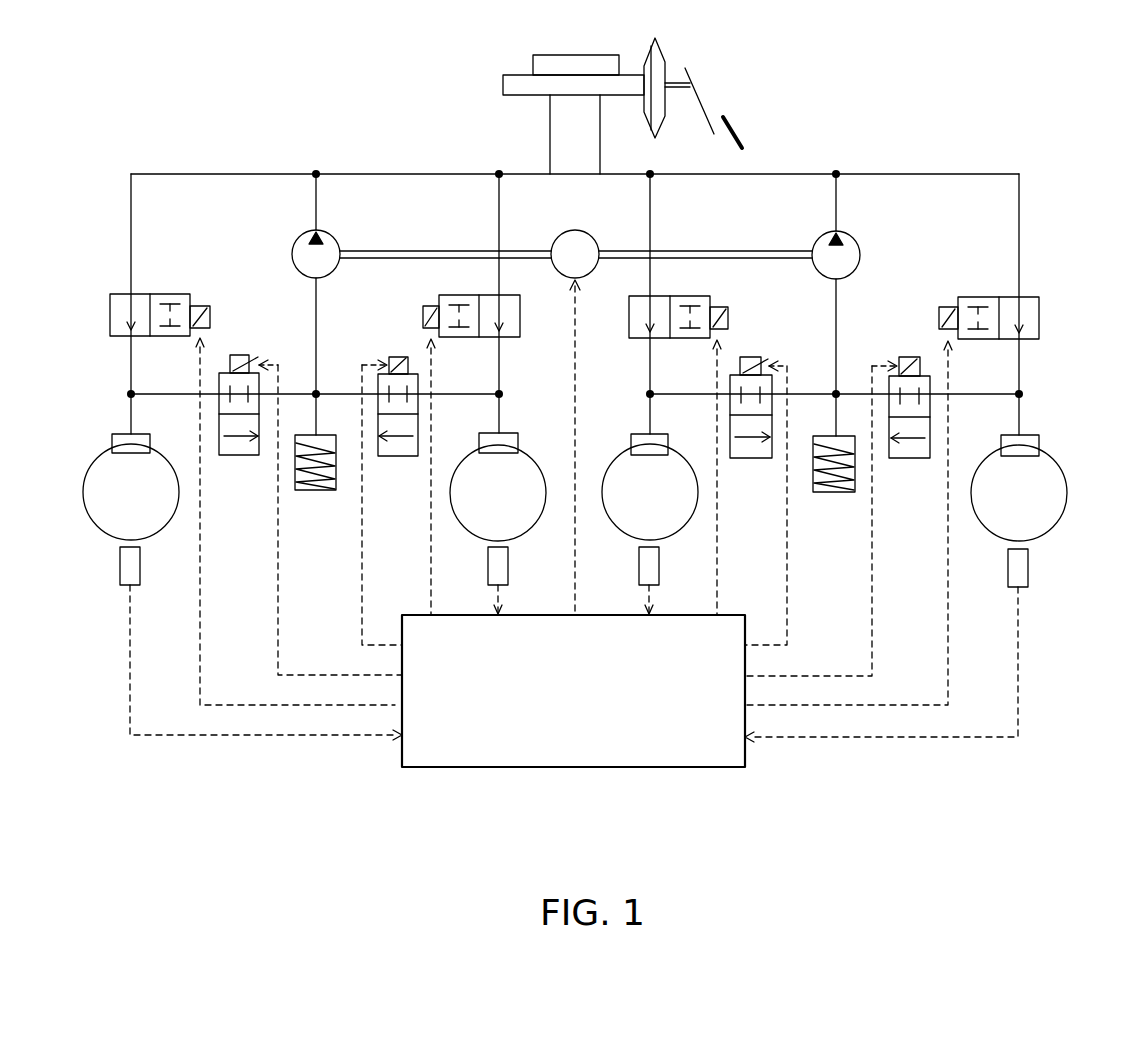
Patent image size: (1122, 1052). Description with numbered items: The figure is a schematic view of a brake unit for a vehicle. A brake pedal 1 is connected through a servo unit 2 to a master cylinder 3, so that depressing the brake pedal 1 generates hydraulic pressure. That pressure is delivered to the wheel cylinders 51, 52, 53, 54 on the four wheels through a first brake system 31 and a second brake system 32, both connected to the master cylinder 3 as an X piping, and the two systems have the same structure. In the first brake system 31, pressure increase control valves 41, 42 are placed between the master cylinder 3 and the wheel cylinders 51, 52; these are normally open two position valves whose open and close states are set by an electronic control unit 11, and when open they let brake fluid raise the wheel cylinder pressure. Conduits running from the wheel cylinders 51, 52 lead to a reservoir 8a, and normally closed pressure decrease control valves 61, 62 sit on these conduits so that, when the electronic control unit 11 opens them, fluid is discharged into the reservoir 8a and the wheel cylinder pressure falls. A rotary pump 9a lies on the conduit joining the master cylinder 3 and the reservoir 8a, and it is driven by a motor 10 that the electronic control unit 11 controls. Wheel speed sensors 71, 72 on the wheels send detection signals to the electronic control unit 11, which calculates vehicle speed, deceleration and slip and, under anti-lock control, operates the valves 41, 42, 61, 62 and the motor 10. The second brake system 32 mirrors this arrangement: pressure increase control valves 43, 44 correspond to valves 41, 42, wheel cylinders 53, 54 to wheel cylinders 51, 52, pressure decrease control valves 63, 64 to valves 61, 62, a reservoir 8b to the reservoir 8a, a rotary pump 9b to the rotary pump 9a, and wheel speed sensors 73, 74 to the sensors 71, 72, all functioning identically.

The brake pedal 1 is at (745, 138).
The servo unit 2 is at (665, 47).
The master cylinder 3 is at (503, 80).
The first brake system 31 is at (550, 133).
The second brake system 32 is at (600, 153).
The motor 10 is at (553, 240).
The rotary pump 9a is at (292, 253).
The rotary pump 9b is at (858, 248).
The pressure increase control valve 41 is at (110, 296).
The pressure increase control valve 42 is at (439, 296).
The pressure increase control valve 43 is at (706, 293).
The pressure increase control valve 44 is at (960, 297).
The pressure decrease control valve 61 is at (239, 455).
The pressure decrease control valve 62 is at (398, 457).
The pressure decrease control valve 63 is at (750, 458).
The pressure decrease control valve 64 is at (909, 458).
The reservoir 8a is at (316, 490).
The reservoir 8b is at (834, 492).
The wheel cylinder 51 is at (112, 440).
The wheel cylinder 52 is at (518, 441).
The wheel cylinder 53 is at (631, 441).
The wheel cylinder 54 is at (1039, 445).
The wheel speed sensor 71 is at (120, 563).
The wheel speed sensor 72 is at (488, 568).
The wheel speed sensor 73 is at (639, 568).
The wheel speed sensor 74 is at (1029, 566).
The electronic control unit 11 is at (745, 756).